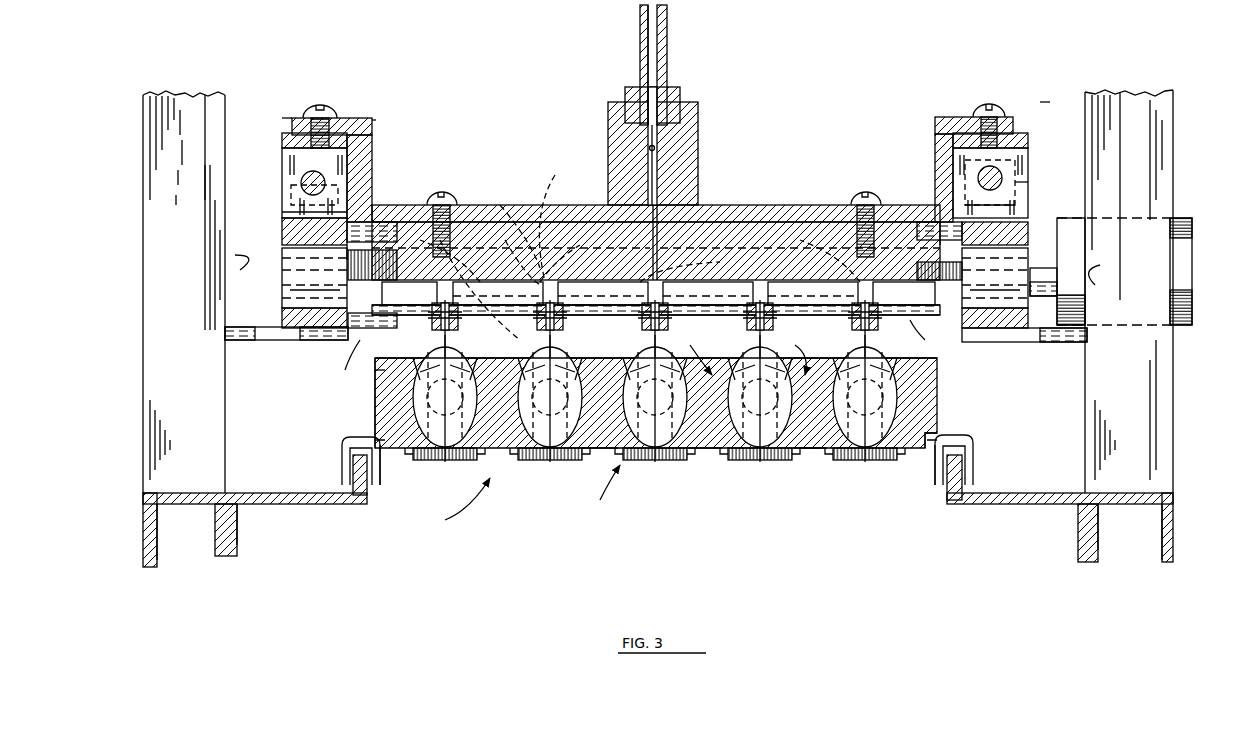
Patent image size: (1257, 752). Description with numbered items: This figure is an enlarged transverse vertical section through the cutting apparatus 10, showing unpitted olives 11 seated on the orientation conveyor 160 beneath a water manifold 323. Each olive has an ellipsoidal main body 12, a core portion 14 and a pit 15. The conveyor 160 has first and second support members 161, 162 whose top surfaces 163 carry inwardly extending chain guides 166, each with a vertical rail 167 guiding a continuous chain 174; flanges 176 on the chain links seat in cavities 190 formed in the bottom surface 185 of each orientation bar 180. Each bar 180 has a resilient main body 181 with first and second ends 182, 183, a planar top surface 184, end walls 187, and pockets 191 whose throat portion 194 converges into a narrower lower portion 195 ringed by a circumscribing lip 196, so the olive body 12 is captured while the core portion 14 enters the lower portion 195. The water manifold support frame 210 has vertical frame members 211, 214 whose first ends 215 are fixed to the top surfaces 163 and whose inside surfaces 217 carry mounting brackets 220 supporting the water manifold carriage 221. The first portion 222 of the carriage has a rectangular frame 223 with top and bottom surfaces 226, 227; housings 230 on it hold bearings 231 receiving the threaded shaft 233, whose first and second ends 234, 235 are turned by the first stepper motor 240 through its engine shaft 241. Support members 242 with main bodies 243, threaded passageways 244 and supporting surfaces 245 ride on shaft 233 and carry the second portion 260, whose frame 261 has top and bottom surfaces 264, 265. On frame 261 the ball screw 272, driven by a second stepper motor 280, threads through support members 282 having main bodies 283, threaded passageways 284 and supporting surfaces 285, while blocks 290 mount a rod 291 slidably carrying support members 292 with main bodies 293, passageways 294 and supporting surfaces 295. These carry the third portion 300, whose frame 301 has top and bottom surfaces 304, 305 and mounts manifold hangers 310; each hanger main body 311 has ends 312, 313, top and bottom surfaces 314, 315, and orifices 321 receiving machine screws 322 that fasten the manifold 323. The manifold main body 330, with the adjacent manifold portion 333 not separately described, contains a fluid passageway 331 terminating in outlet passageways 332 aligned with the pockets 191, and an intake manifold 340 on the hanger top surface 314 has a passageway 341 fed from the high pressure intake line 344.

The apparatus for cutting a work object 10 is at (1045, 100).
The unpitted olive 11 is at (425, 345).
The main body 12 is at (405, 395).
The core portion 14 is at (667, 346).
The pit 15 is at (468, 407).
The orientation conveyor 160 is at (451, 503).
The first support member 161 is at (143, 525).
The second support member 162 is at (1173, 522).
The top surface 163 is at (210, 493).
The chain guide 166 is at (275, 493).
The rail 167 is at (367, 480).
The continuous chain 174 is at (342, 445).
The flange 176 is at (382, 462).
The orientation bar 180 is at (599, 490).
The main body 181 is at (937, 363).
The first end 182 is at (937, 428).
The second end 183 is at (375, 382).
The top surface 184 is at (375, 360).
The bottom surface 185 is at (810, 455).
The end wall 187 is at (375, 418).
The cavity 190 is at (415, 458).
The pocket 191 is at (705, 354).
The throat portion 194 is at (810, 354).
The lower portion 195 is at (675, 455).
The circumscribing lip 196 is at (685, 460).
The water manifold support frame 210 is at (133, 213).
The first frame member 211 is at (205, 95).
The fourth frame member 214 is at (1135, 150).
The first end 215 is at (165, 480).
The inside surface 217 is at (235, 255).
The mounting bracket 220 is at (248, 330).
The water manifold carriage 221 is at (1050, 235).
The first portion 222 is at (990, 328).
The rectangularly shaped frame 223 is at (282, 318).
The top surface 226 is at (388, 315).
The bottom surface 227 is at (339, 355).
The bearing housing 230 is at (330, 302).
The bearing 231 is at (282, 258).
The threaded shaft 233 is at (915, 336).
The first end 234 is at (925, 270).
The second end 235 is at (365, 250).
The first stepper motor 240 is at (1185, 250).
The engine shaft 241 is at (1045, 275).
The support member 242 is at (552, 195).
The main body 243 is at (620, 293).
The threaded passageway 244 is at (505, 235).
The supporting surface 245 is at (605, 335).
The second portion 260 is at (278, 232).
The rectangularly shaped frame 261 is at (362, 225).
The top surface 264 is at (935, 228).
The bottom surface 265 is at (942, 222).
The ball screw 272 is at (982, 175).
The right housing 280 is at (1035, 200).
The support member 282 is at (1005, 212).
The main body 283 is at (1015, 170).
The threaded passageway 284 is at (1030, 180).
The supporting surface 285 is at (1028, 160).
The block 290 is at (305, 210).
The rod 291 is at (322, 175).
The support member 292 is at (333, 125).
The main body 293 is at (288, 160).
The passageway 294 is at (320, 180).
The supporting surface 295 is at (285, 140).
The third portion 300 is at (372, 118).
The rectangularly shaped frame 301 is at (978, 125).
The top surface 304 is at (287, 130).
The bottom surface 305 is at (296, 190).
The manifold hanger 310 is at (720, 205).
The main body 311 is at (700, 205).
The first end 312 is at (940, 135).
The second end 313 is at (378, 120).
The top surface 314 is at (528, 205).
The bottom surface 315 is at (530, 215).
The orifice 321 is at (458, 205).
The machine screw 322 is at (430, 200).
The water manifold 323 is at (632, 260).
The main body 330 is at (575, 280).
The fluid passageway 331 is at (511, 253).
The outlet passageway 332 is at (490, 322).
The right manifold section 333 is at (800, 253).
The intake manifold 340 is at (608, 125).
The fluid passageway 341 is at (652, 185).
The high pressure intake line 344 is at (667, 30).